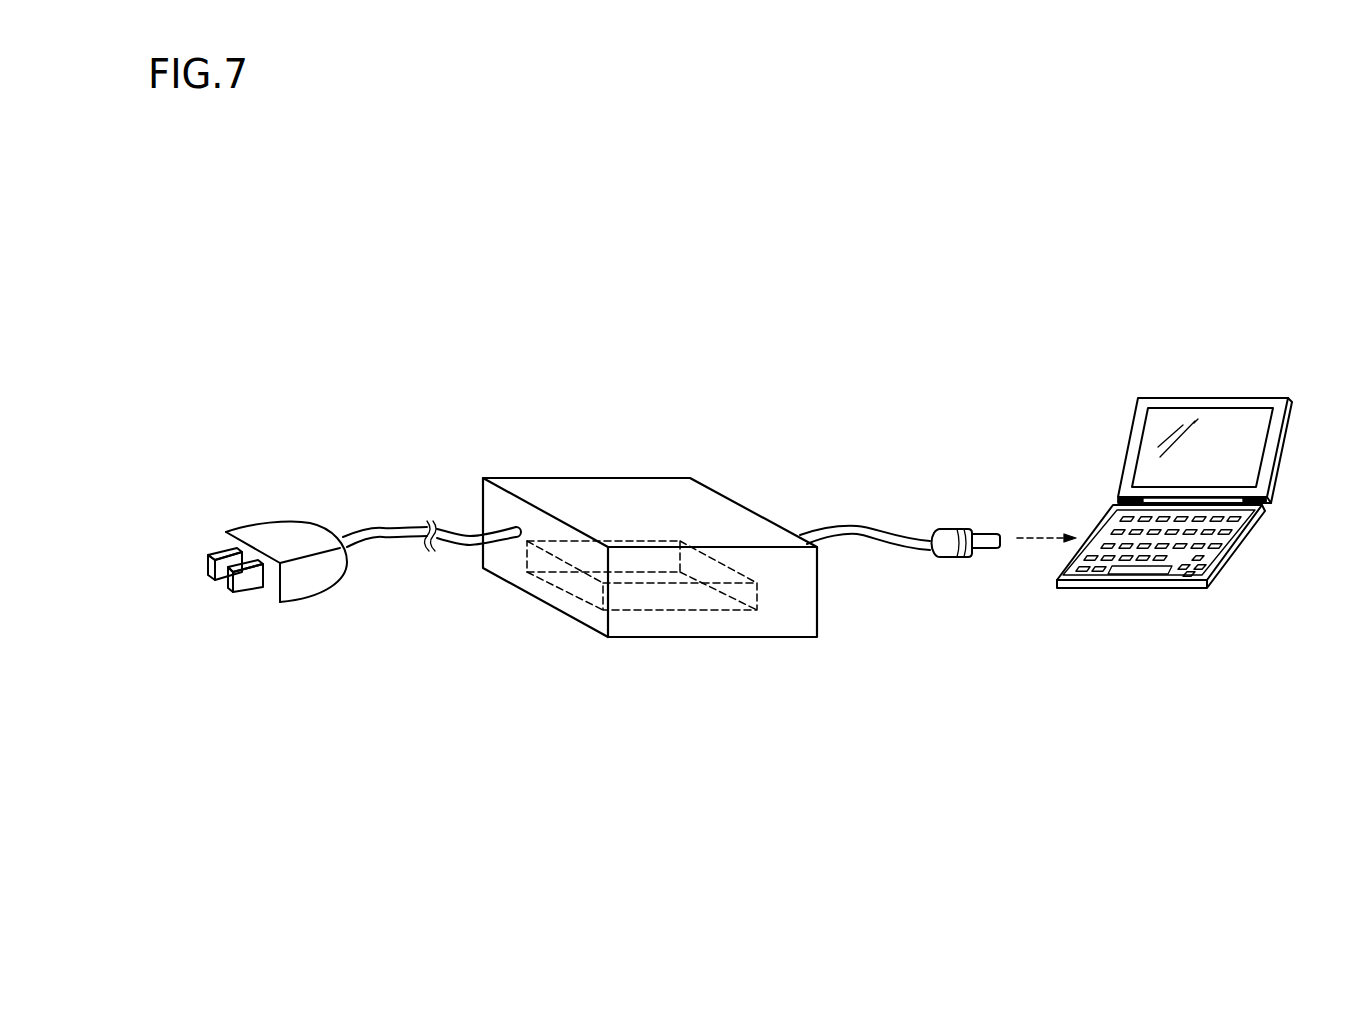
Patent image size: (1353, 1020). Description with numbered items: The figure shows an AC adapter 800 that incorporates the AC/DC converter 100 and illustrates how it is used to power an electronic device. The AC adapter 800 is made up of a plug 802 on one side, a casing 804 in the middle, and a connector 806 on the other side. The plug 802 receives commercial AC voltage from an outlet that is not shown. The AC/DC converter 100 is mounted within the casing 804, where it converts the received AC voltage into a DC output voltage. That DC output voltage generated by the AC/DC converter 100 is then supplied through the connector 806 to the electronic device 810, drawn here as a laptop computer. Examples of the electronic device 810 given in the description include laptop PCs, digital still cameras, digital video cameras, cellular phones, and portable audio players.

The AC adapter 800 is at (764, 815).
The plug 802 is at (285, 538).
The casing 804 is at (578, 477).
The AC/DC converter 100 is at (670, 597).
The connector 806 is at (950, 525).
The electronic device 810 is at (1222, 398).